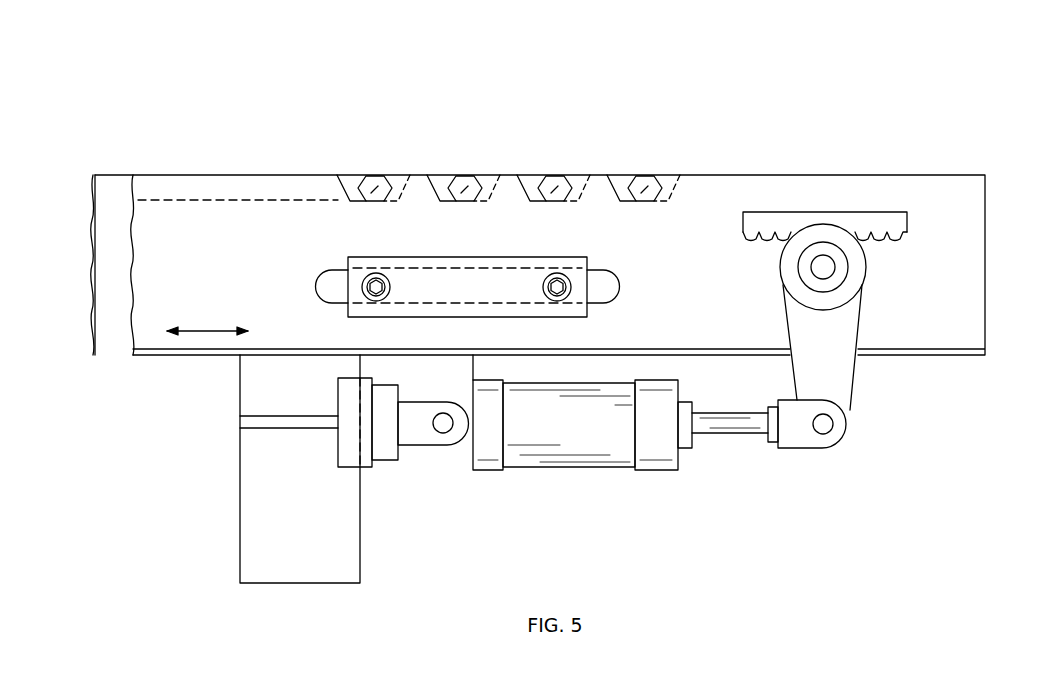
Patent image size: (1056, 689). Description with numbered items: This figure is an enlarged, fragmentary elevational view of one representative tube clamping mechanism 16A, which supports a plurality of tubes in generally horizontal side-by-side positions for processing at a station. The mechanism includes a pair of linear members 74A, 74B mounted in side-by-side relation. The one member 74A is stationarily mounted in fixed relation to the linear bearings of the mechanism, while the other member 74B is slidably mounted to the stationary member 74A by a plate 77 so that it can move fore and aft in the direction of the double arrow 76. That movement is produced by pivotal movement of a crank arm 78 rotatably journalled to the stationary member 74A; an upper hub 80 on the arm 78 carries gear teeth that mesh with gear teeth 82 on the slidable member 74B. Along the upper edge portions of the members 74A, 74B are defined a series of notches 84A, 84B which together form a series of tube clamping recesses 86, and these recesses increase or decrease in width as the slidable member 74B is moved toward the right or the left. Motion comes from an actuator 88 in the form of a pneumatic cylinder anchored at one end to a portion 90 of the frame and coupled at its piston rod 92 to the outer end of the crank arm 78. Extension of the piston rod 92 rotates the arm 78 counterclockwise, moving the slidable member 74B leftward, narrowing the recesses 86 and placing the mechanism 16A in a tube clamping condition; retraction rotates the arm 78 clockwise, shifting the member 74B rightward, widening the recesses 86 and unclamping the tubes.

The tube clamping mechanism 16A is at (940, 122).
The stationary linear member 74A is at (118, 187).
The slidable linear member 74B is at (185, 180).
The double arrow 76 is at (213, 331).
The plate 77 is at (370, 262).
The crank arm 78 is at (853, 385).
The upper hub 80 is at (858, 268).
The gear teeth 82 is at (857, 212).
The notches 84A is at (397, 173).
The notches 84B is at (342, 178).
The tube clamping recesses 86 is at (375, 188).
The actuator 88 is at (548, 455).
The frame portion 90 is at (352, 516).
The piston rod 92 is at (735, 432).